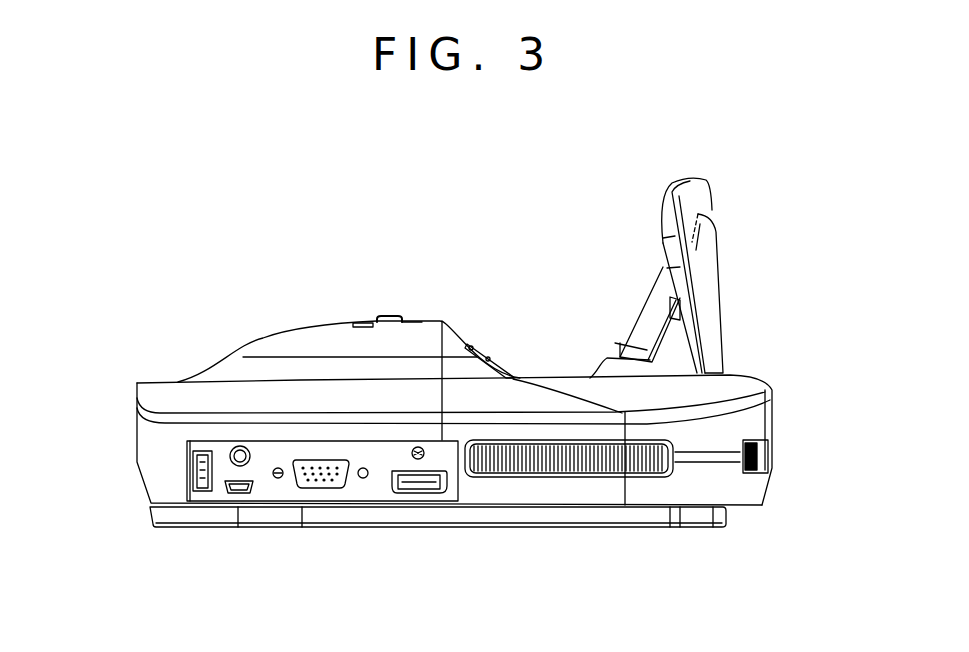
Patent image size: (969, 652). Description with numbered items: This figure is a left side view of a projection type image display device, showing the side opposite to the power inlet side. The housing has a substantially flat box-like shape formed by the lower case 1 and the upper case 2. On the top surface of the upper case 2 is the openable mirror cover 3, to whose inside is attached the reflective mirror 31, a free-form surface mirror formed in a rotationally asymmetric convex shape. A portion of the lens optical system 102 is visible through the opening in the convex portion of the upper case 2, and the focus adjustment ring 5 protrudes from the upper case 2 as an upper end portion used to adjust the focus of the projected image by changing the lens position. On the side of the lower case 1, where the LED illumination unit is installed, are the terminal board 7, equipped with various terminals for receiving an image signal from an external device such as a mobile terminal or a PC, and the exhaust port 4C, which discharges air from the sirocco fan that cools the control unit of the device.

The lower case 1 is at (160, 447).
The upper case 2 is at (268, 349).
The mirror cover 3 is at (692, 204).
The reflective mirror 31 is at (655, 300).
The focus adjustment ring 5 is at (383, 317).
The terminal board 7 is at (332, 482).
The exhaust port 4C is at (530, 467).
The lens optical system 102 is at (498, 360).